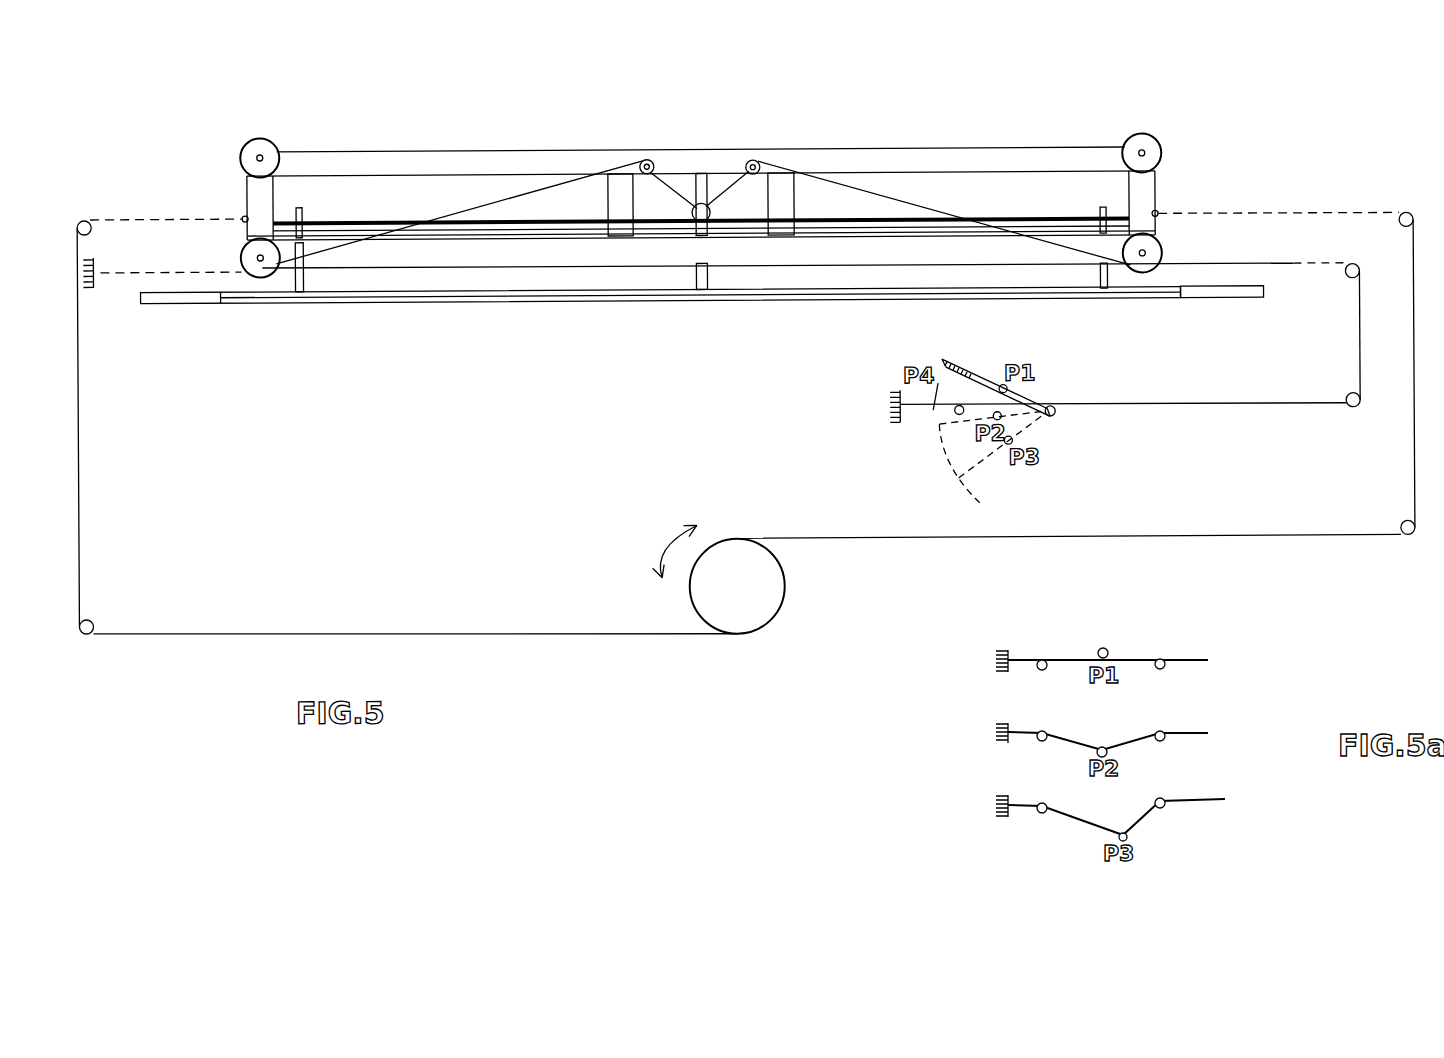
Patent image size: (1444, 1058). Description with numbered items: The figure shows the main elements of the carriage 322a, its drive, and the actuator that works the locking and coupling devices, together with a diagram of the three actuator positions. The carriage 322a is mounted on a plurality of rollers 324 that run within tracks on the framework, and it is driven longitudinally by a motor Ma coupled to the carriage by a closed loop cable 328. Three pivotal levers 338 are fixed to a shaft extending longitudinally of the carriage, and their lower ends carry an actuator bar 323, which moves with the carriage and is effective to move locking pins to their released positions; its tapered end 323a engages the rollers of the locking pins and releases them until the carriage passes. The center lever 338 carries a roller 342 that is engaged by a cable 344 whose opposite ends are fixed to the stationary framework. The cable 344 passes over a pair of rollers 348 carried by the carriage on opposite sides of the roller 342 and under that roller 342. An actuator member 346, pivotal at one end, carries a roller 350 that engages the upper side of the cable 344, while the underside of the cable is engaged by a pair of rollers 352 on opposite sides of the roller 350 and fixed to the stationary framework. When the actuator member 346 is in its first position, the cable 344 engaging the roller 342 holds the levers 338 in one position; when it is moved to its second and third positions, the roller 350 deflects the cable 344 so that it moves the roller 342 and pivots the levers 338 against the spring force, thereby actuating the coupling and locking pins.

In FIG. 5, the carriage 322a is at (1004, 117).
In FIG. 5, the rollers 324 is at (257, 149).
In FIG. 5, the pivotal levers 338 is at (300, 208).
In FIG. 5, the cable 344 is at (547, 187).
In FIG. 5a, the cable 344 is at (1188, 659).
In FIG. 5, the rollers 348 is at (647, 161).
In FIG. 5, the roller 342 is at (701, 206).
In FIG. 5, the actuator bar 323 is at (760, 298).
In FIG. 5, the tapered end 323a is at (1224, 303).
In FIG. 5, the actuator member 346 is at (1026, 398).
In FIG. 5, the roller 350 is at (1002, 389).
In FIG. 5a, the roller 350 is at (1103, 648).
In FIG. 5, the rollers 352 is at (957, 418).
In FIG. 5a, the rollers 352 is at (1040, 670).
In FIG. 5, the closed loop cable 328 is at (482, 630).